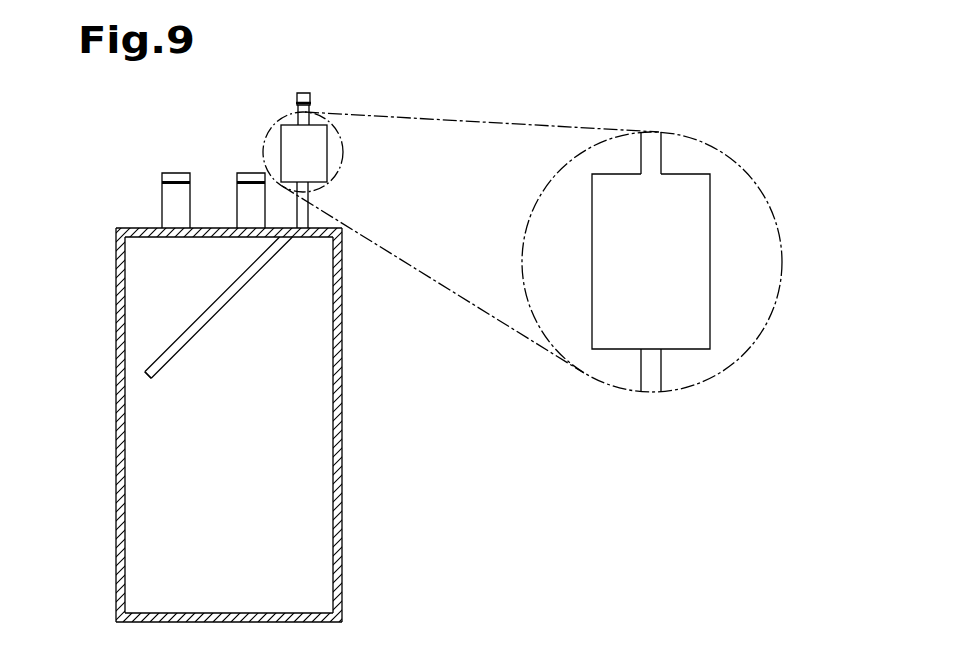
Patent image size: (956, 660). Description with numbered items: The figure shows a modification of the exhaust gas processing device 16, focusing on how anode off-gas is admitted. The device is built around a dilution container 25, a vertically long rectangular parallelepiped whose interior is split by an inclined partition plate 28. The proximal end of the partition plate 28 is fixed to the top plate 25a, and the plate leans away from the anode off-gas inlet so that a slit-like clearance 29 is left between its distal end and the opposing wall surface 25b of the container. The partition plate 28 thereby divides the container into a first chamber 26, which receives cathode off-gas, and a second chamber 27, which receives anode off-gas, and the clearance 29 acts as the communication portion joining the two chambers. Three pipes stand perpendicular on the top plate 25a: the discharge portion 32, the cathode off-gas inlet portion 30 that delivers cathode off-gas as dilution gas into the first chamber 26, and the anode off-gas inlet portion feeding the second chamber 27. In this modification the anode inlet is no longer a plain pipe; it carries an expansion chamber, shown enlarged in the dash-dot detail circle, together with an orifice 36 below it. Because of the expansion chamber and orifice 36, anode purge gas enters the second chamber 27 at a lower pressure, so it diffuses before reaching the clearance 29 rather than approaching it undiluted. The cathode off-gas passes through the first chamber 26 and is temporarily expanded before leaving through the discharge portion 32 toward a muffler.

The exhaust gas processing device 16 is at (391, 360).
The dilution container 25 is at (351, 390).
The top plate 25a is at (141, 230).
The wall surface 25b is at (116, 468).
The first chamber 26 is at (207, 243).
The second chamber 27 is at (327, 485).
The partition plate 28 is at (207, 327).
The clearance 29 is at (138, 376).
The cathode off-gas inlet portion 30 is at (243, 197).
The discharge portion 32 is at (170, 205).
The orifice 36 is at (641, 362).